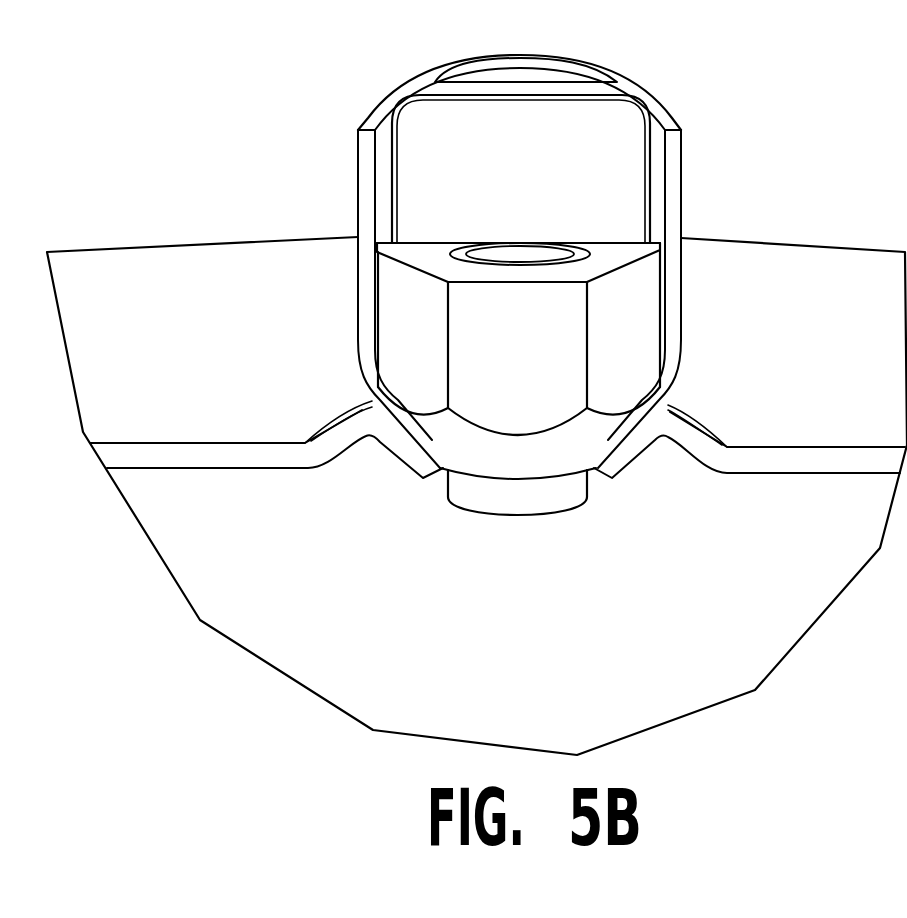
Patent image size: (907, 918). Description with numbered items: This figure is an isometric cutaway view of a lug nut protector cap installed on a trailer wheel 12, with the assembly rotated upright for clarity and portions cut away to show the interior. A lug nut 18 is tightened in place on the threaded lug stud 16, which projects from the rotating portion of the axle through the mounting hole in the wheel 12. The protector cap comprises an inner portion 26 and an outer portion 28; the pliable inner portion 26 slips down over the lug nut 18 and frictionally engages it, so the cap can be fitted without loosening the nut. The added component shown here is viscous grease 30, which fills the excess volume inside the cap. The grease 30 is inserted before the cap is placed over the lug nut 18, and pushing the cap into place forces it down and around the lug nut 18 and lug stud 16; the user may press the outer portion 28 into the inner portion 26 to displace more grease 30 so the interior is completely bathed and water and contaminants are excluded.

The wheel 12 is at (217, 443).
The lug stud 16 is at (585, 243).
The lug nut 18 is at (565, 428).
The inner portion 26 is at (357, 187).
The outer portion 28 is at (622, 80).
The grease 30 is at (423, 142).